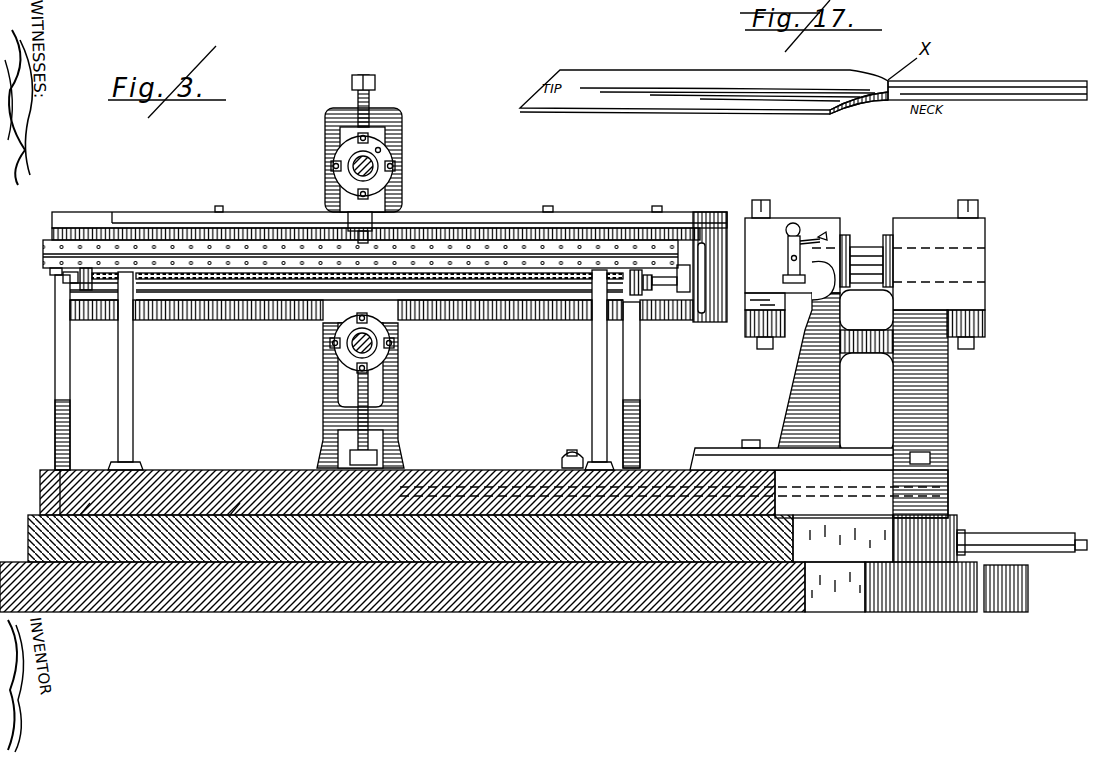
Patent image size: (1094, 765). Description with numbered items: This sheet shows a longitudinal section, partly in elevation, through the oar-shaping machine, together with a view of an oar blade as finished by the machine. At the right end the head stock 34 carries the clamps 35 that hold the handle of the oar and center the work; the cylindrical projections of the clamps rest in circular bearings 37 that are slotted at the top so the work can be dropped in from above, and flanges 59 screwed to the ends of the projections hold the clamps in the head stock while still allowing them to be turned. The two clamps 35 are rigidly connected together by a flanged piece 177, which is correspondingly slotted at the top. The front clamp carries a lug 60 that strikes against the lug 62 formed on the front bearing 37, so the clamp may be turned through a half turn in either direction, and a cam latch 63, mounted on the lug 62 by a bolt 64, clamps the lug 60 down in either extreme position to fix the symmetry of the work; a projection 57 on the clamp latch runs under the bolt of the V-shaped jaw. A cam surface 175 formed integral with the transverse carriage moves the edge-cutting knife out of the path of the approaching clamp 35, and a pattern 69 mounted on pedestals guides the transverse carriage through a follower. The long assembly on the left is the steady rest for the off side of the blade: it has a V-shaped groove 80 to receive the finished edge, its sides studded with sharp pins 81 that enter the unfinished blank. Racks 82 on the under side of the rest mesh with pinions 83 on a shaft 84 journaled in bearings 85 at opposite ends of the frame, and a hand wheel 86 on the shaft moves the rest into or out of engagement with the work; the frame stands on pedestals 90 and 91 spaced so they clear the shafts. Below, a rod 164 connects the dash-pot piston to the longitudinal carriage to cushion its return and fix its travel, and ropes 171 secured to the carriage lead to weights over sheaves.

The head stock 34 is at (828, 400).
The clamps 35 is at (755, 302).
The circular bearings 37 is at (922, 214).
The projection 57 is at (824, 217).
The flanges 59 is at (846, 236).
The lug 60 is at (756, 287).
The lug 62 is at (812, 284).
The cam latch 63 is at (797, 222).
The bolt 64 is at (810, 250).
The pattern 69 is at (928, 490).
The V-shaped groove 80 is at (668, 255).
The pins 81 is at (598, 230).
The racks 82 is at (95, 230).
The pinions 83 is at (637, 294).
The shaft 84 is at (290, 292).
The bearings 85 is at (653, 282).
The hand wheel 86 is at (702, 262).
The pedestal 90 is at (135, 386).
The pedestal 91 is at (592, 378).
The rod 164 is at (1004, 531).
The ropes 171 is at (1078, 557).
The cam surface 175 is at (719, 448).
The flanged piece 177 is at (873, 285).